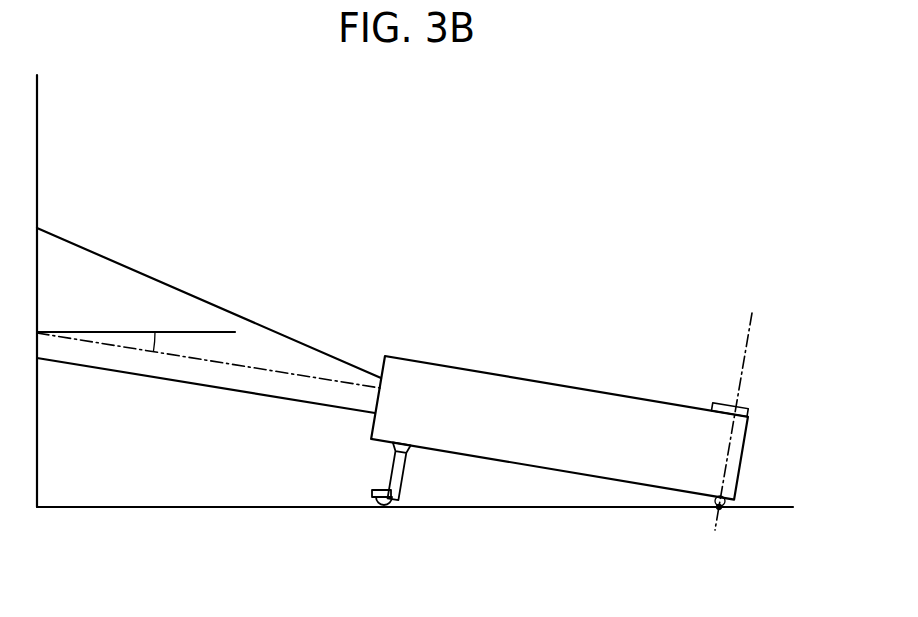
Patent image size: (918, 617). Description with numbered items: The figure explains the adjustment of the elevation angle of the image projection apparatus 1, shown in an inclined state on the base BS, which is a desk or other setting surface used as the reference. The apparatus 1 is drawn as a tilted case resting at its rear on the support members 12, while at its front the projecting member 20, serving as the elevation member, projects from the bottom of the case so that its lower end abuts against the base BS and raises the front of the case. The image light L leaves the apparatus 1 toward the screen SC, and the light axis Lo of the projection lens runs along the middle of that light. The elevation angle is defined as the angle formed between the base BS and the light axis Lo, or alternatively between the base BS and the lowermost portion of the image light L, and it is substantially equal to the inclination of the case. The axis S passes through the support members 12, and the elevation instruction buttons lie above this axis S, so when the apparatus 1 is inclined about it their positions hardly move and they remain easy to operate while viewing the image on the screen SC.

The image projection apparatus 1 is at (589, 477).
The support members 12 is at (726, 502).
The projecting member 20 is at (400, 482).
The axis S is at (724, 510).
The screen SC is at (38, 137).
The base BS is at (226, 506).
The image light L is at (246, 317).
The light axis of the projection lens Lo is at (240, 367).